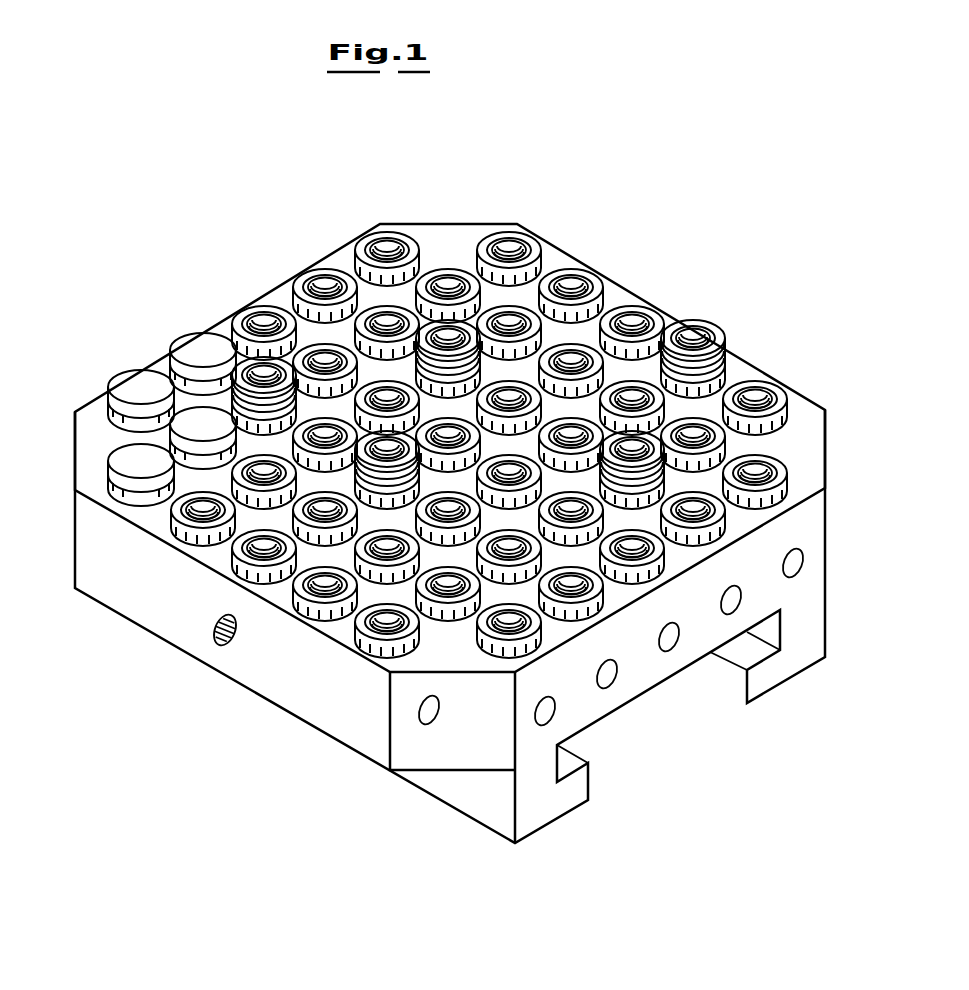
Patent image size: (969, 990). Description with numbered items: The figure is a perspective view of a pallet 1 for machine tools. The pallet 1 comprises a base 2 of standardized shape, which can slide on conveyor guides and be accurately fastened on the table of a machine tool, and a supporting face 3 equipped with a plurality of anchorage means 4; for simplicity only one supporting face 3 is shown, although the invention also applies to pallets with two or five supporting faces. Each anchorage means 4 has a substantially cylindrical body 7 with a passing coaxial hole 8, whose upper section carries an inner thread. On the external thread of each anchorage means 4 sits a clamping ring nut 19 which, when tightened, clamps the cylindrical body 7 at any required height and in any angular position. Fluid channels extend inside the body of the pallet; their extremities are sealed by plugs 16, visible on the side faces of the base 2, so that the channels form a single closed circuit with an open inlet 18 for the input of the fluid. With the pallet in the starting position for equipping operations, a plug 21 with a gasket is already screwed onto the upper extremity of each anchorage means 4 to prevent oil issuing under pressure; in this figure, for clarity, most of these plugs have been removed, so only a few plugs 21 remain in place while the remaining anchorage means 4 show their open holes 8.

The pallet 1 is at (454, 498).
The base 2 is at (818, 630).
The supporting face 3 is at (452, 237).
The anchorage means 4 is at (350, 240).
The cylindrical body 7 is at (372, 235).
The passing coaxial hole 8 is at (395, 243).
The plugs 16 is at (803, 560).
The open inlet 18 is at (220, 647).
The clamping ring nut 19 is at (362, 240).
The plug 21 is at (120, 385).